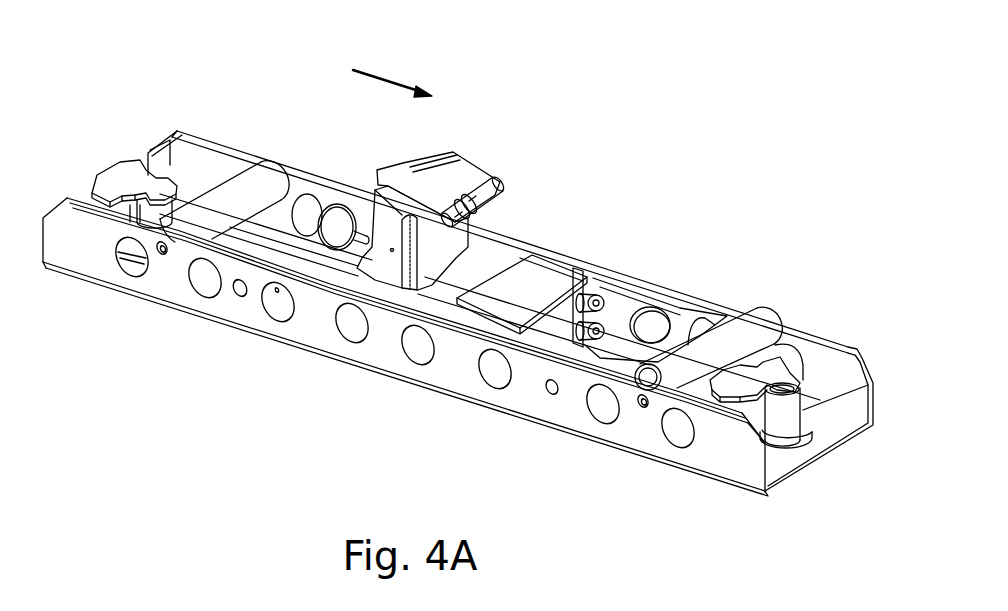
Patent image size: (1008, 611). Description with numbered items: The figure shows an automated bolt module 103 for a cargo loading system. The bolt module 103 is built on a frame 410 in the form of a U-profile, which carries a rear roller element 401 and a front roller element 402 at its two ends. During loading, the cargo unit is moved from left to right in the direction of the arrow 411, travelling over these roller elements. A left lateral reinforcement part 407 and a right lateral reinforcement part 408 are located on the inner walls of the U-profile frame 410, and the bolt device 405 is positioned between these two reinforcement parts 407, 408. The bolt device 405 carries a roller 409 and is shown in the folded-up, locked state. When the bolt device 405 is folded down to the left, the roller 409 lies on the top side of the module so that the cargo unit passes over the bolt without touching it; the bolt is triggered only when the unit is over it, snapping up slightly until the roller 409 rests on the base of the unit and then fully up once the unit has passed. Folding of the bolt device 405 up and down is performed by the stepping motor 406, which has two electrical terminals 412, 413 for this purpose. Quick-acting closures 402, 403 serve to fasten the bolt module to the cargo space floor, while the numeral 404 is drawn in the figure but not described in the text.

The bolt module 103 is at (640, 131).
The rear roller element 401 is at (273, 175).
The front roller element 402 is at (757, 330).
The quick-acting closure 403 is at (130, 172).
The second cam lock 404 is at (713, 388).
The bolt device 405 is at (477, 170).
The stepping motor 406 is at (620, 280).
The left lateral reinforcement part 407 is at (567, 262).
The right lateral reinforcement part 408 is at (407, 292).
The roller 409 is at (480, 208).
The frame 410 is at (233, 308).
The arrow 411 is at (397, 82).
The electrical terminal 412 is at (572, 308).
The electrical terminal 413 is at (600, 348).